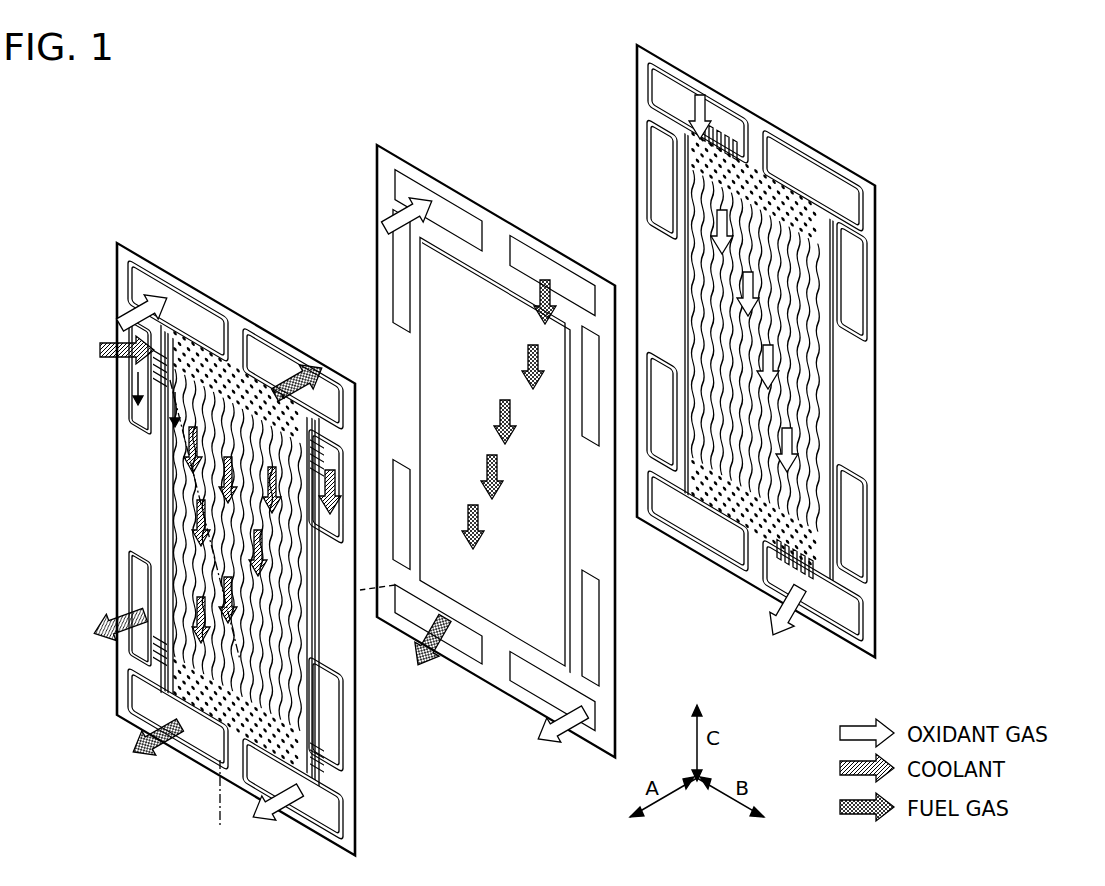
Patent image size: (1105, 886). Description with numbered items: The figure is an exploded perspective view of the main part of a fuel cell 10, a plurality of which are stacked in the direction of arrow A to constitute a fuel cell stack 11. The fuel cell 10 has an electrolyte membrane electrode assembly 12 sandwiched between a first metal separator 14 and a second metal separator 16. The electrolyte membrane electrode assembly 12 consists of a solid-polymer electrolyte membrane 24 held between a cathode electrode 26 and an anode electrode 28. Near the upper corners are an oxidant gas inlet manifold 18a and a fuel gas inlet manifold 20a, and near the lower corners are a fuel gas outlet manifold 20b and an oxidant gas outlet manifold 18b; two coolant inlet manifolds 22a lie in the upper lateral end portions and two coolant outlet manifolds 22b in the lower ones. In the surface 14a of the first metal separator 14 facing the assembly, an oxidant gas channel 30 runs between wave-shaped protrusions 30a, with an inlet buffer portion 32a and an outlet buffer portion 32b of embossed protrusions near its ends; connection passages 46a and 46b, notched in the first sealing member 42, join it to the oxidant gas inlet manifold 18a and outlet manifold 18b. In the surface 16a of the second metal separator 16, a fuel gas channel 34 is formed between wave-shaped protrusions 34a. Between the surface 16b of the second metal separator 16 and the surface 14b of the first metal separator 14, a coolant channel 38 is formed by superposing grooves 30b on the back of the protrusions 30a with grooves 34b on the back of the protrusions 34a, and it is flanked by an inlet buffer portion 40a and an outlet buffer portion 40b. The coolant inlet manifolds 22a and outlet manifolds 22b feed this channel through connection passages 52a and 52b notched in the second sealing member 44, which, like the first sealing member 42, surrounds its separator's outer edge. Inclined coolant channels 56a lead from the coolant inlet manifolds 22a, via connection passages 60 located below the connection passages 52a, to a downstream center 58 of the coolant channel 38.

The fuel cell 10 is at (119, 114).
The fuel cell stack 11 is at (155, 114).
The electrolyte membrane electrode assembly 12 is at (494, 425).
The first metal separator 14 is at (761, 338).
The surface of the first metal separator 14a is at (868, 590).
The surface of the first metal separator 14b is at (872, 622).
The second metal separator 16 is at (261, 527).
The surface of the second metal separator 16a is at (352, 805).
The surface of the second metal separator 16b is at (352, 788).
The oxidant gas inlet manifold 18a is at (180, 302).
The oxidant gas outlet manifold 18b is at (300, 812).
The fuel gas inlet manifold 20a is at (282, 378).
The fuel gas outlet manifold 20b is at (150, 722).
The coolant inlet manifold 22a is at (135, 333).
The coolant outlet manifold 22b is at (135, 577).
The solid-polymer electrolyte membrane 24 is at (600, 692).
The cathode electrode 26 is at (525, 640).
The anode electrode 28 is at (493, 660).
The oxidant gas channel 30 is at (810, 375).
The wave-shaped protrusions 30a is at (805, 410).
The grooves 30b is at (810, 435).
The inlet buffer portion 32a is at (790, 208).
The outlet buffer portion 32b is at (735, 510).
The fuel gas channel 34 is at (185, 520).
The wave-shaped protrusions 34a is at (300, 620).
The grooves 34b is at (395, 585).
The coolant channel 38 is at (180, 505).
The inlet buffer portion 40a is at (205, 358).
The outlet buffer portion 40b is at (200, 735).
The first sealing member 42 is at (850, 185).
The second sealing member 44 is at (338, 375).
The connection passages 46a is at (724, 130).
The connection passages 46b is at (810, 585).
The connection passages 52a is at (140, 352).
The connection passages 52b is at (130, 643).
The inclined coolant channels 56a is at (165, 462).
The downstream center of the coolant channel 58 is at (214, 806).
The connection passages 60 is at (160, 438).